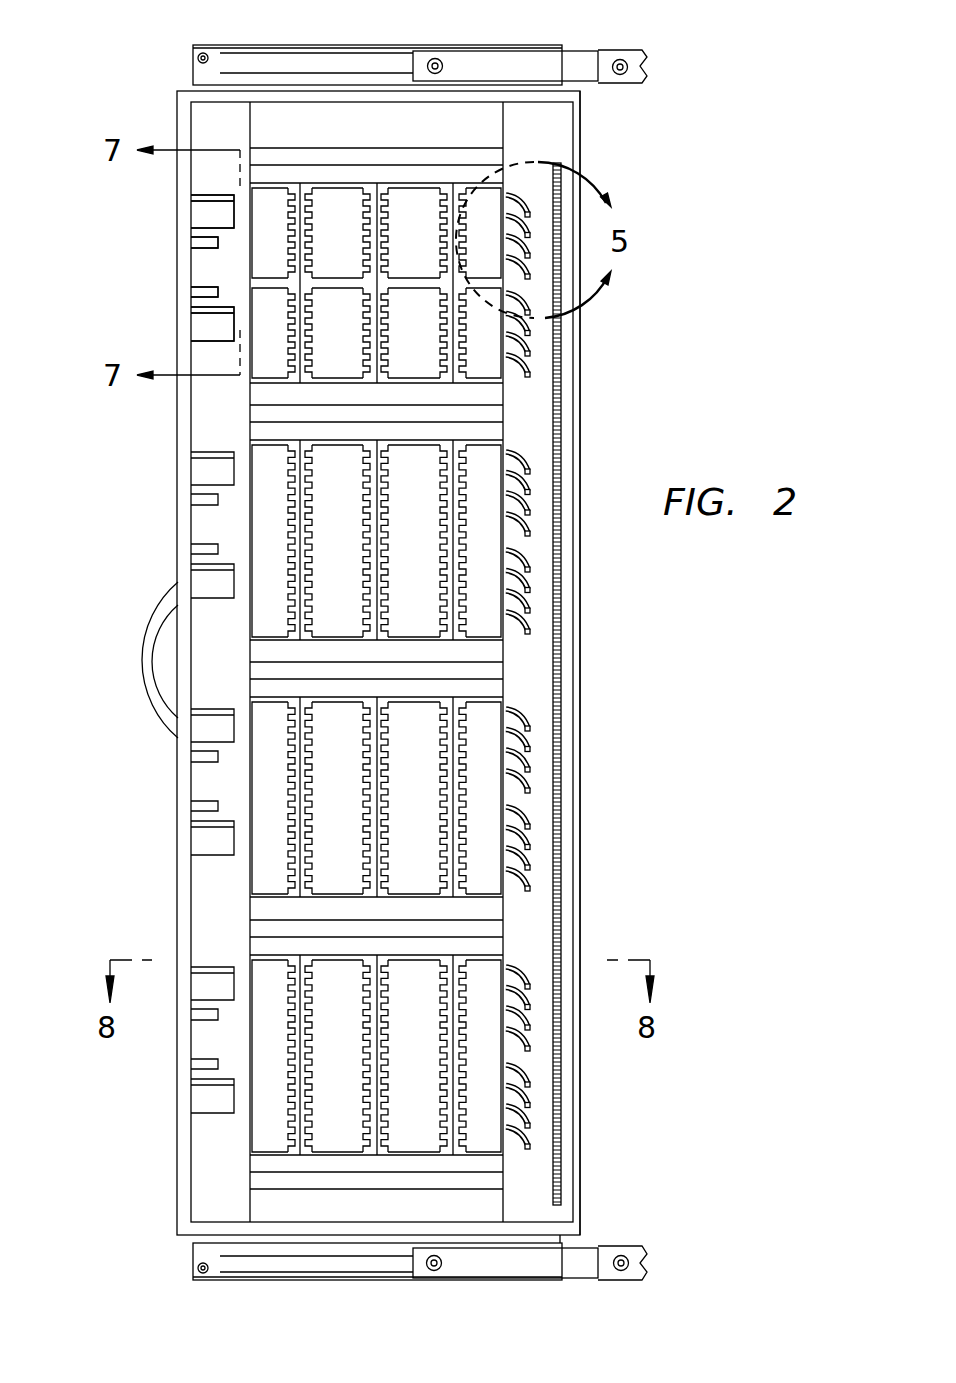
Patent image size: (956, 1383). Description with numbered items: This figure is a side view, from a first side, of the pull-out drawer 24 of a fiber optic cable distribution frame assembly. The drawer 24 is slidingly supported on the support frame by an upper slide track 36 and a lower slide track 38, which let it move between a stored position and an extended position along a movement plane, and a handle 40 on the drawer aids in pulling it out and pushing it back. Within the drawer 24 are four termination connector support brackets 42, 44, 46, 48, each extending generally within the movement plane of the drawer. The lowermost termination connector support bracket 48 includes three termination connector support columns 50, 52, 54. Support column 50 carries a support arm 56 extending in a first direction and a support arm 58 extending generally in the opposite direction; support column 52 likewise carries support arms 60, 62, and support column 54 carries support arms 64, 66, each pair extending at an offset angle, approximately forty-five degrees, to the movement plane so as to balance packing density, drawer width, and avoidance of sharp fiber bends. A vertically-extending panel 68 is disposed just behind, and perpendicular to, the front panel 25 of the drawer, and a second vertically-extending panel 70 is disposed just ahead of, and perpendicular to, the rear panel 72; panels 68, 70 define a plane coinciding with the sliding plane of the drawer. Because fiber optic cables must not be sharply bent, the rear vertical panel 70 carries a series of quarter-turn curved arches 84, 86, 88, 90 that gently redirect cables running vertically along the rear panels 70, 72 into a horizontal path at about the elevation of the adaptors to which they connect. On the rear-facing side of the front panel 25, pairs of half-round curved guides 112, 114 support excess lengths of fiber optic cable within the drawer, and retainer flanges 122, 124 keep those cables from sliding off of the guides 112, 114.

The pull-out drawer 24 is at (168, 408).
The front panel 25 is at (177, 513).
The upper slide track 36 is at (494, 68).
The lower slide track 38 is at (468, 1262).
The handle 40 is at (142, 662).
The termination connector support bracket 42 is at (383, 188).
The termination connector support bracket 44 is at (383, 445).
The termination connector support bracket 46 is at (383, 702).
The lowermost termination connector support bracket 48 is at (438, 1052).
The support column 50 is at (337, 1056).
The support column 52 is at (414, 1056).
The support column 54 is at (480, 1056).
The support arm 56 is at (290, 968).
The support arm 58 is at (309, 970).
The support arm 60 is at (365, 968).
The support arm 62 is at (386, 970).
The support arm 64 is at (440, 968).
The support arm 66 is at (462, 970).
The vertically-extending panel 68 is at (210, 907).
The vertically-extending panel 70 is at (595, 649).
The rear panel 72 is at (578, 550).
The quarter-turn curved arch 84 is at (522, 200).
The quarter-turn curved arch 86 is at (527, 230).
The quarter-turn curved arch 88 is at (530, 250).
The quarter-turn curved arch 90 is at (530, 272).
The half-round curved guide 112 is at (205, 213).
The half-round curved guide 114 is at (205, 327).
The retainer flange 122 is at (200, 243).
The retainer flange 124 is at (200, 292).